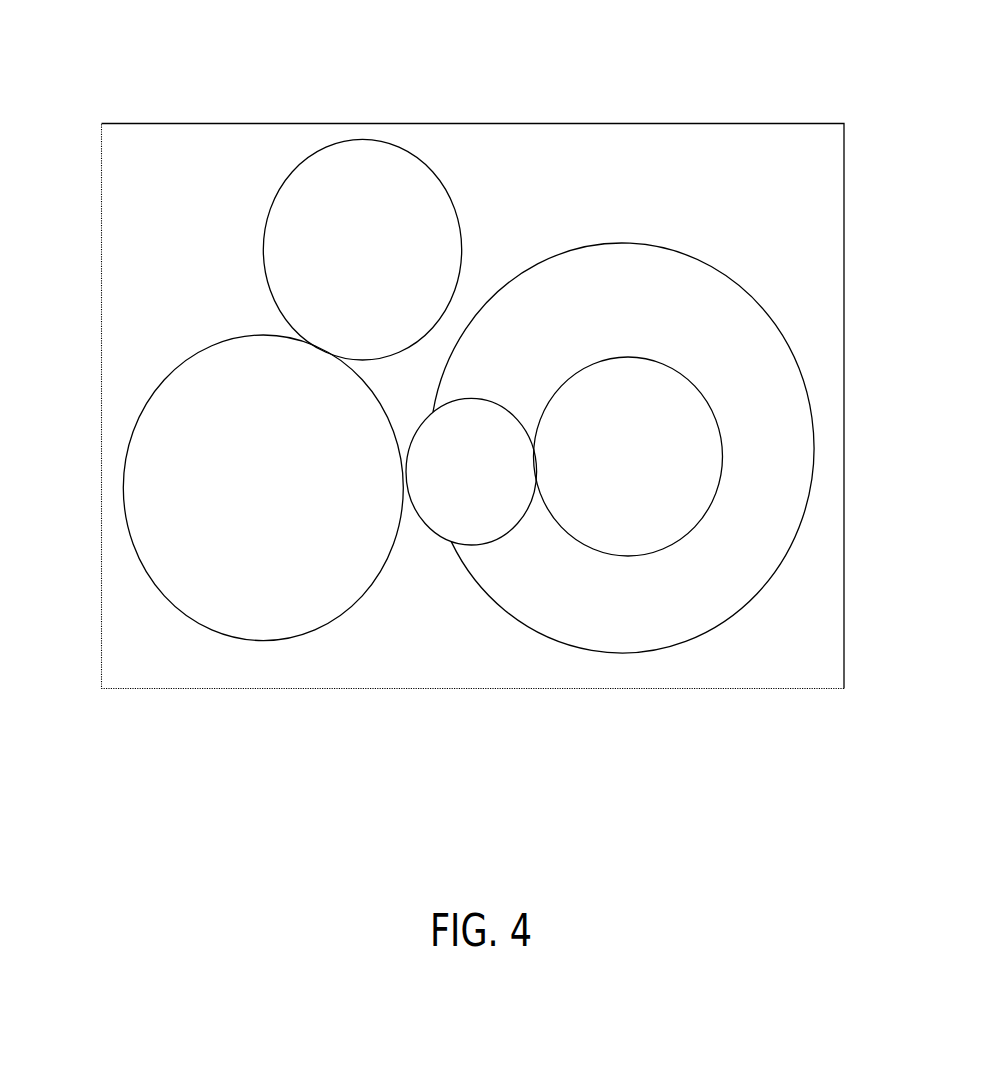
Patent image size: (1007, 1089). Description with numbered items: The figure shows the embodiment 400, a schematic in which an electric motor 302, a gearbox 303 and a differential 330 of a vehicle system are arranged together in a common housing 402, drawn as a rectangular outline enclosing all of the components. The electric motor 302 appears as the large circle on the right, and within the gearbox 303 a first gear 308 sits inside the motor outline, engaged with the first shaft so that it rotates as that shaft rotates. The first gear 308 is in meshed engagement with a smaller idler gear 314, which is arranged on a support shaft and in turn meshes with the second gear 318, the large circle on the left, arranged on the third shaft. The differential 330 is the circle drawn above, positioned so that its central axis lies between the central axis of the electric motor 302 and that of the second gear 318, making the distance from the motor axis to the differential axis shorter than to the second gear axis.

The embodiment 400 is at (772, 48).
The common housing 402 is at (102, 124).
The electric motor 302 is at (658, 325).
The gearbox 303 is at (432, 594).
The first gear 308 is at (642, 468).
The idler gear 314 is at (488, 480).
The second gear 318 is at (282, 504).
The differential 330 is at (379, 262).